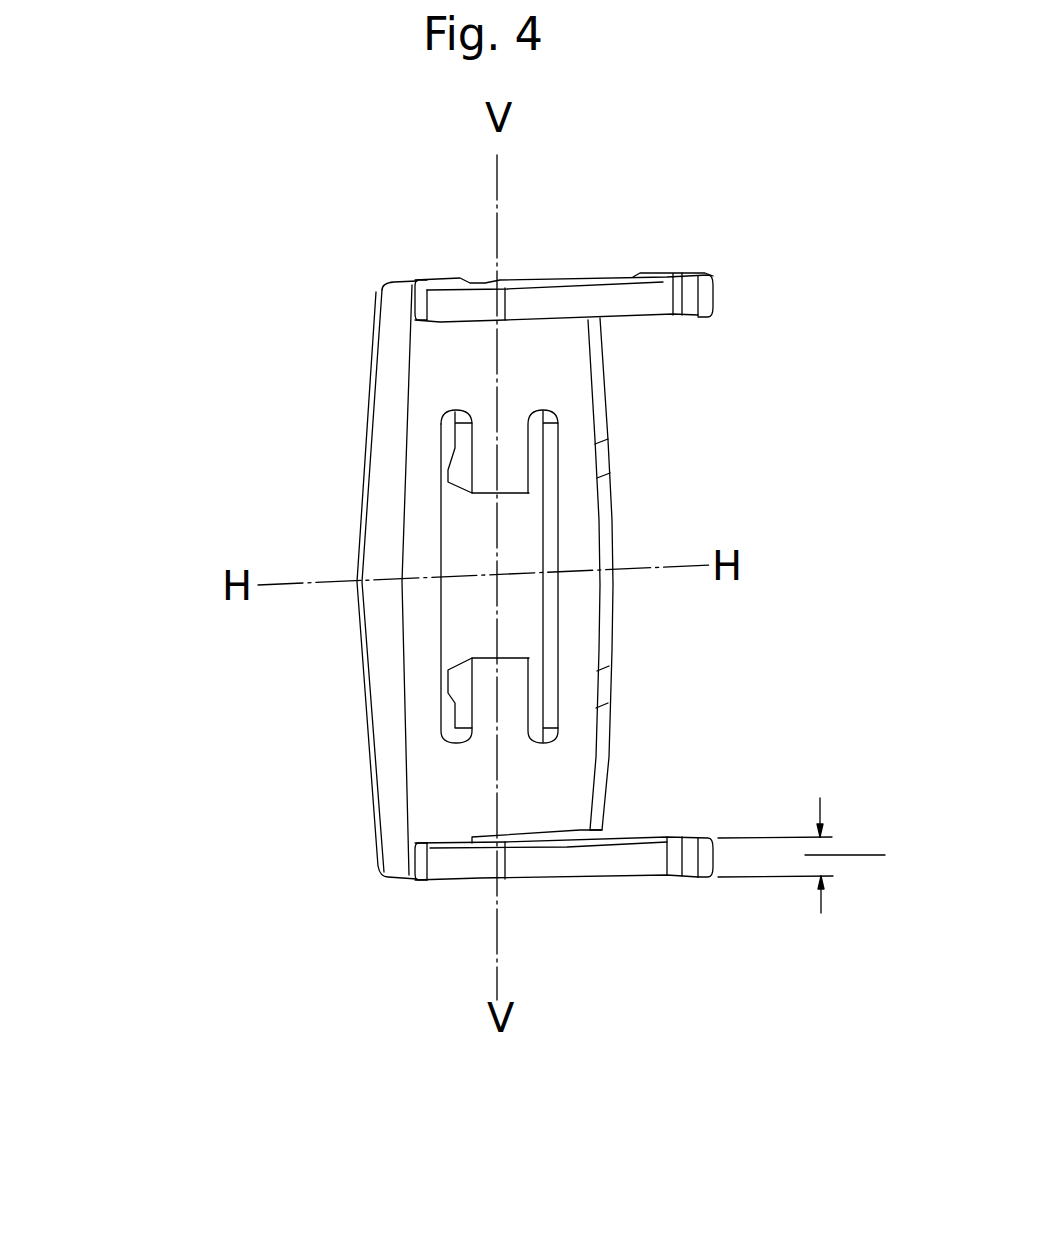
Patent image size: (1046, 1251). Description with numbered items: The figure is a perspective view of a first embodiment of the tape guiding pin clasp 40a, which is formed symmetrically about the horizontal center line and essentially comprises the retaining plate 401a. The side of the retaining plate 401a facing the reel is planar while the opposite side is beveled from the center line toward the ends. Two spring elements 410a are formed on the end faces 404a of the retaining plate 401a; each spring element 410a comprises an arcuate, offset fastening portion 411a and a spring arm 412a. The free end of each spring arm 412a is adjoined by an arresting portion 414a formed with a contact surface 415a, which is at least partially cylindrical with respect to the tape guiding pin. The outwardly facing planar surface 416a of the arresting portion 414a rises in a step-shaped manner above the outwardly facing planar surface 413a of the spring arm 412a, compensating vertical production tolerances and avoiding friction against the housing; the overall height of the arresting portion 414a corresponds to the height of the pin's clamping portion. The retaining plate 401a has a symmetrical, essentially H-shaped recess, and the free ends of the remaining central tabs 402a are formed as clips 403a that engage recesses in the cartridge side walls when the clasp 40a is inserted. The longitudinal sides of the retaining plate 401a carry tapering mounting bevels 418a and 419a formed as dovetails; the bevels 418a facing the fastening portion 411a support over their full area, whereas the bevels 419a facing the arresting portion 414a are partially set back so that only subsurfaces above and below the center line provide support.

The tape guiding pin clasp 40a is at (360, 327).
The retaining plate 401a is at (540, 397).
The central tabs 402a is at (510, 465).
The clips 403a is at (462, 477).
The end faces 404a is at (562, 852).
The spring elements 410a is at (555, 277).
The fastening portion 411a is at (460, 868).
The spring arm 412a is at (615, 858).
The outwardly facing planar surface of the spring arm 413a is at (600, 278).
The arresting portion 414a is at (687, 836).
The contact surface 415a is at (708, 300).
The outwardly facing planar surface of the arresting portion 416a is at (697, 274).
The mounting bevels 418a is at (390, 399).
The mounting bevels 419a is at (612, 518).